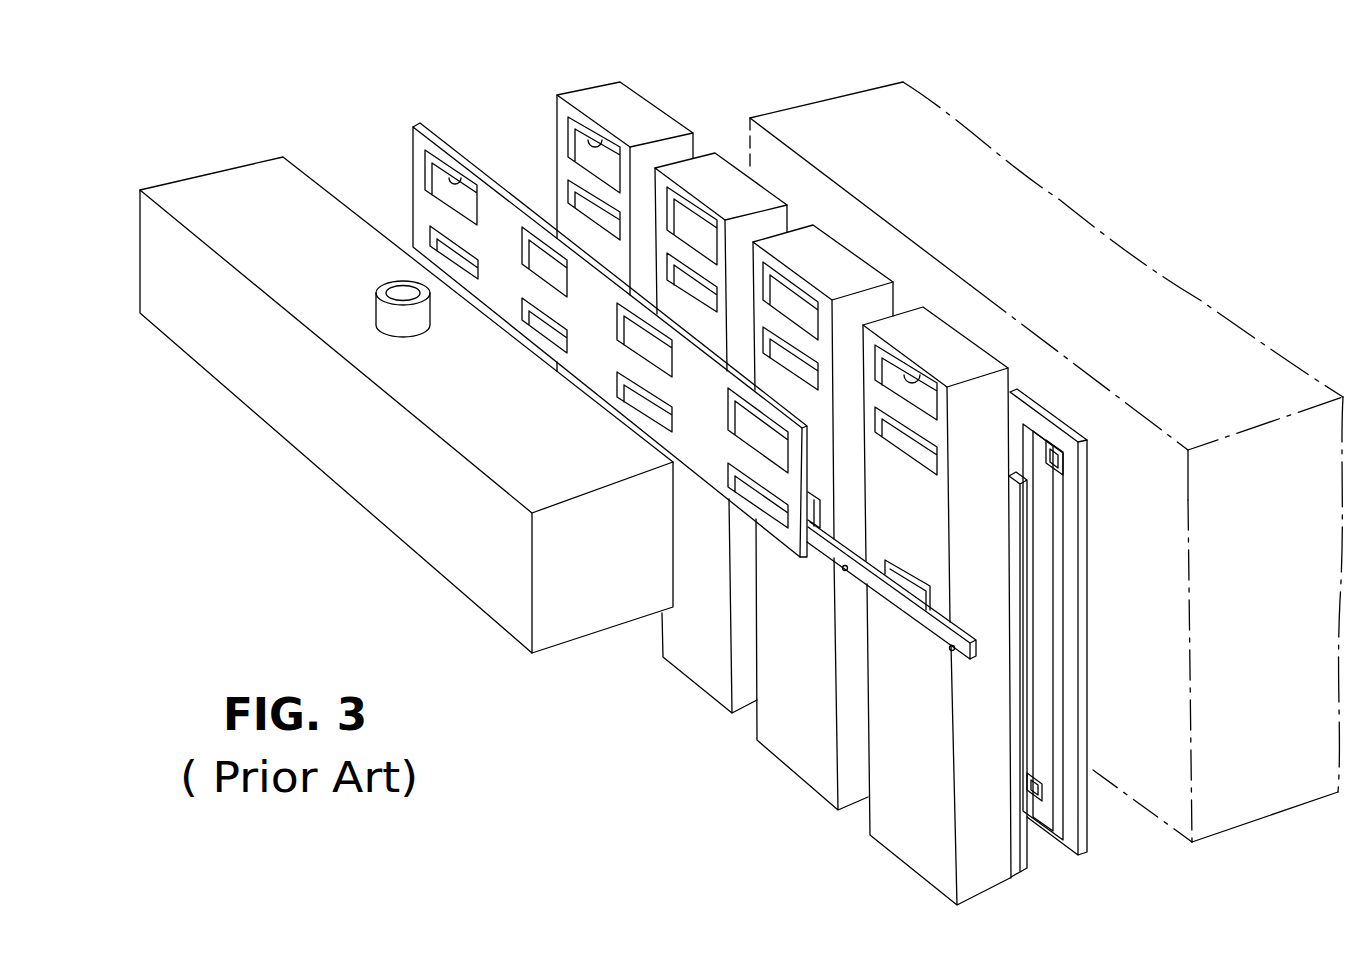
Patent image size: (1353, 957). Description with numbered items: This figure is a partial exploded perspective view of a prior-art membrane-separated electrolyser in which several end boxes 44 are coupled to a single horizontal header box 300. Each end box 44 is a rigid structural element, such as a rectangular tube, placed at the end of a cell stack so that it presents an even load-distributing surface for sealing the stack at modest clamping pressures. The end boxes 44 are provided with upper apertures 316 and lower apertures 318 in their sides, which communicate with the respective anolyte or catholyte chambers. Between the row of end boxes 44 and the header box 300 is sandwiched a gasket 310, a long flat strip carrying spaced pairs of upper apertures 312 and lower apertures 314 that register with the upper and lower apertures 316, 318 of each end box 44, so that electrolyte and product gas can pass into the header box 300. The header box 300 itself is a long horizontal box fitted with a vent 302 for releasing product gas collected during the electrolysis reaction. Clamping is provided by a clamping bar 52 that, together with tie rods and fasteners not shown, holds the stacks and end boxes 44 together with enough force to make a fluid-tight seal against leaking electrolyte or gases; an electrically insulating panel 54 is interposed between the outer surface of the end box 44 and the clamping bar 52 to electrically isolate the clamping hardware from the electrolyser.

The horizontal header box 300 is at (322, 450).
The vent 302 is at (378, 300).
The gasket 310 is at (414, 195).
The upper apertures 312 is at (458, 172).
The lower apertures 314 is at (432, 237).
The upper apertures 316 is at (605, 135).
The lower apertures 318 is at (573, 198).
The clamping bar 52 is at (904, 612).
The electrically insulating panel 54 is at (890, 562).
The end box 44 is at (988, 873).